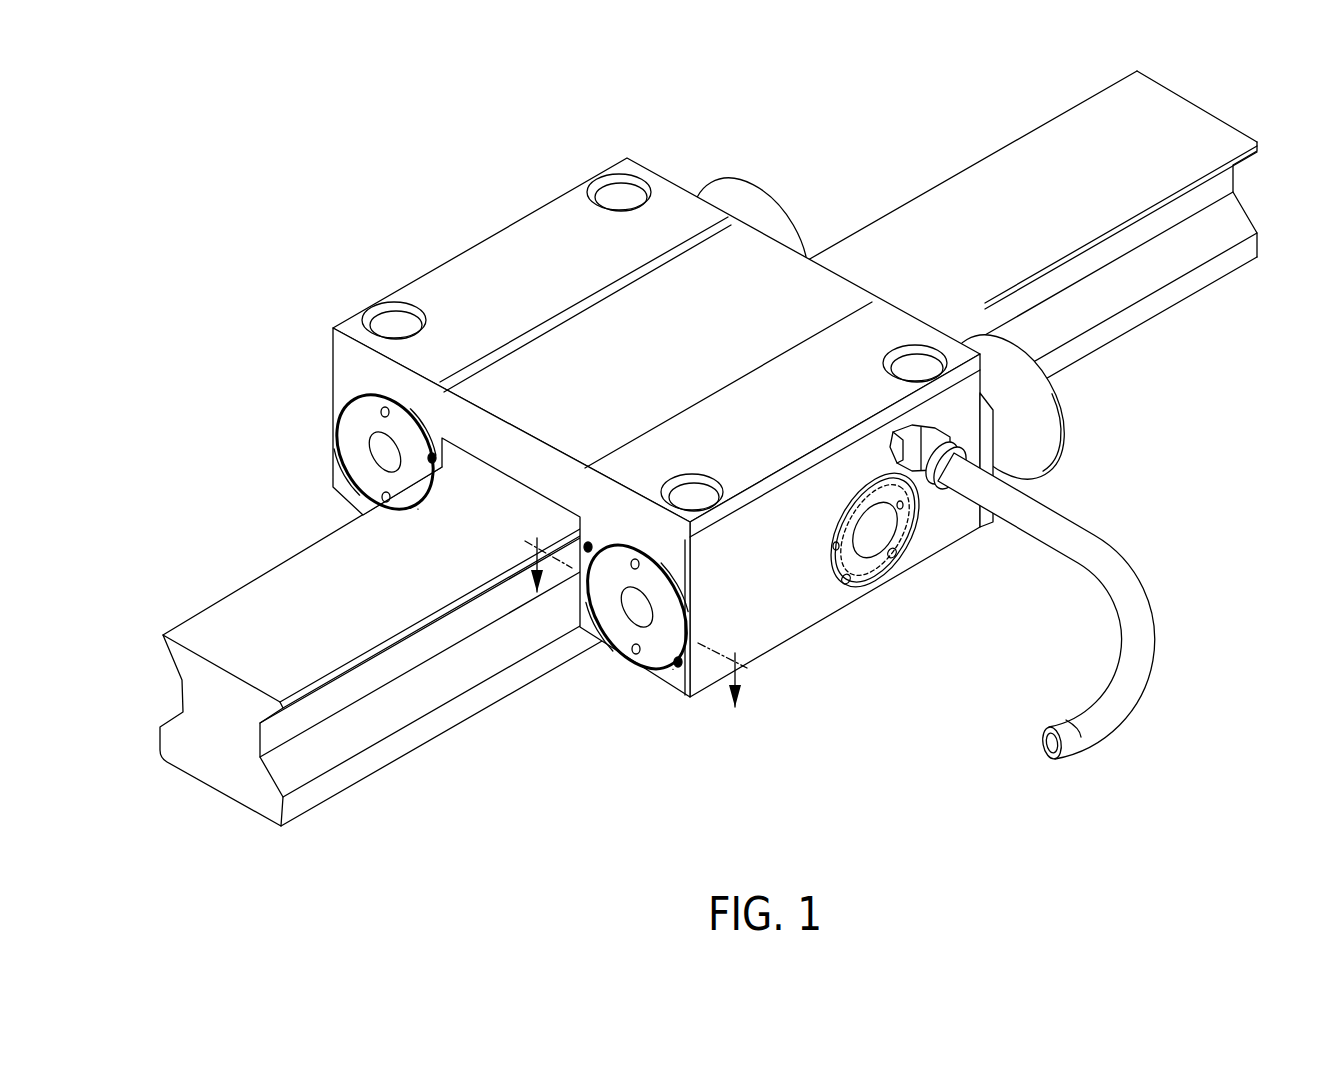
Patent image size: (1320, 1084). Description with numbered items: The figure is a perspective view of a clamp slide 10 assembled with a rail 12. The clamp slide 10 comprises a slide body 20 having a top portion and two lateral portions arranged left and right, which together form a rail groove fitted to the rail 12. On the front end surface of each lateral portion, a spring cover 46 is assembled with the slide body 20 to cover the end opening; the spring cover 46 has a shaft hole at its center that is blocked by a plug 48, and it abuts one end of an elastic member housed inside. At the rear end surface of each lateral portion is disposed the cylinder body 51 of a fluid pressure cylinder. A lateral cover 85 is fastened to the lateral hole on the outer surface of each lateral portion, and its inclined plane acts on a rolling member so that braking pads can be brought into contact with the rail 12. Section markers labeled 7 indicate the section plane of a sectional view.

The clamp slide 10 is at (698, 446).
The rail 12 is at (202, 582).
The slide body 20 is at (505, 265).
The spring cover 46 is at (462, 541).
The plug 48 is at (385, 452).
The cylinder body 51 is at (740, 190).
The lateral cover 85 is at (868, 545).
The section line 7- 7 is at (635, 632).